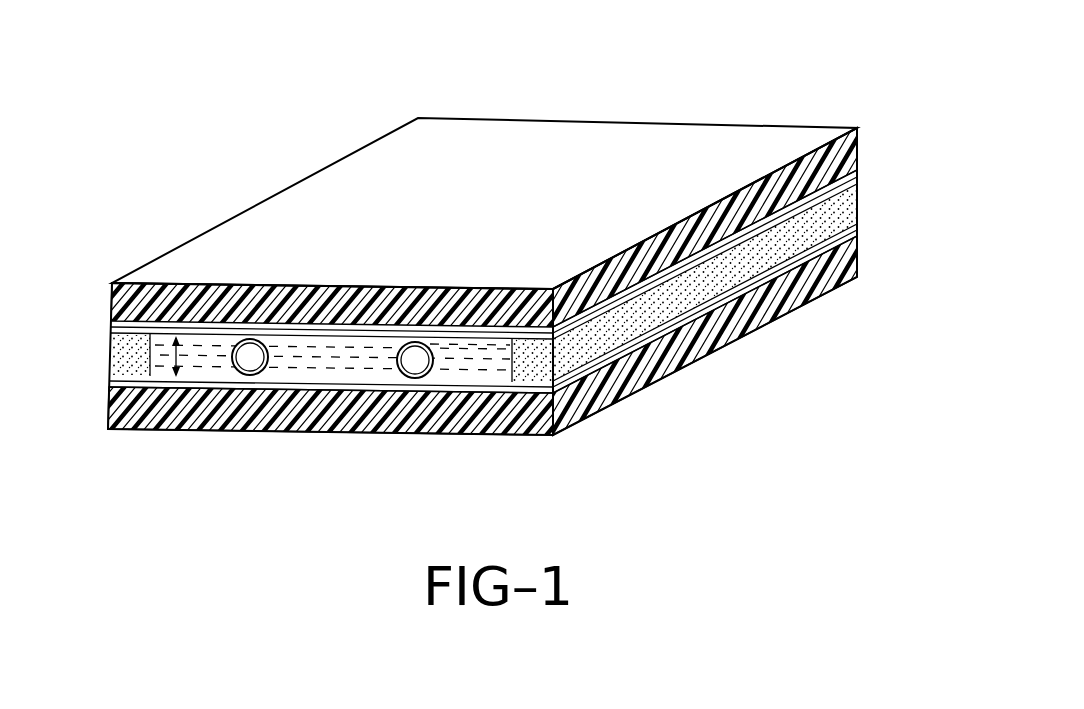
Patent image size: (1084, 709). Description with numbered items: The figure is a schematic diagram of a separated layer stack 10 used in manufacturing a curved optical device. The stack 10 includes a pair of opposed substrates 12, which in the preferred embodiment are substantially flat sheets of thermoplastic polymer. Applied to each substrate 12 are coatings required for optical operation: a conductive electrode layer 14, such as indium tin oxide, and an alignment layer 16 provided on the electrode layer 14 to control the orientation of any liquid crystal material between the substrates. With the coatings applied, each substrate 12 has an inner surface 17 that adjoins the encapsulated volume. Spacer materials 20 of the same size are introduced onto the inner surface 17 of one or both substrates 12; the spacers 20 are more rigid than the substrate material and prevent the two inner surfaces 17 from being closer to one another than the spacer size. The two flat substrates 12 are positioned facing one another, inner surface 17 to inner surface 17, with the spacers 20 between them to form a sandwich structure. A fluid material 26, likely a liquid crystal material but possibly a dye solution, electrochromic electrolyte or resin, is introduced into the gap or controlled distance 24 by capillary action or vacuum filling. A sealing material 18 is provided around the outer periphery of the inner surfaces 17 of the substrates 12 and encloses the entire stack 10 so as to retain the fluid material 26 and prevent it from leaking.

The separated layer stack 10 is at (636, 91).
The substrate 12 is at (822, 146).
The electrode layer 14 is at (857, 164).
The alignment layer 16 is at (842, 187).
The sealing material 18 is at (845, 205).
The inner surface 17 is at (198, 340).
The spacer 20 is at (247, 362).
The controlled distance 24 is at (173, 357).
The fluid material 26 is at (465, 362).